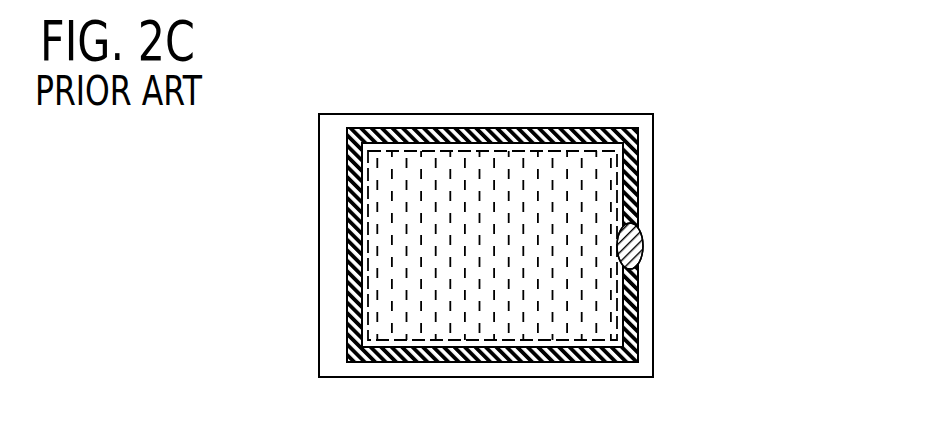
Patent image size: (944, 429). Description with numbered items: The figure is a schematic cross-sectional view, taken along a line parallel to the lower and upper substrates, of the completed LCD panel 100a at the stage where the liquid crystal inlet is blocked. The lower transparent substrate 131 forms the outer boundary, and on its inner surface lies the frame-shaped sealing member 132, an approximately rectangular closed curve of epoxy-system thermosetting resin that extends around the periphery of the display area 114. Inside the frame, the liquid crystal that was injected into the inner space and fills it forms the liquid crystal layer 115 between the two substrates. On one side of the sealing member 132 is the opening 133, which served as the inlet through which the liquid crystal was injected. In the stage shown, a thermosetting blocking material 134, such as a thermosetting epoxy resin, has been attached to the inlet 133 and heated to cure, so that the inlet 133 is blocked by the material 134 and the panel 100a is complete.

The LCD panel 100a is at (656, 93).
The lower transparent substrate 131 is at (334, 188).
The frame-shaped sealing member 132 is at (537, 135).
The display area 114 is at (350, 306).
The liquid crystal layer 115 is at (443, 160).
The opening 133 is at (638, 256).
The thermosetting blocking material 134 is at (635, 240).